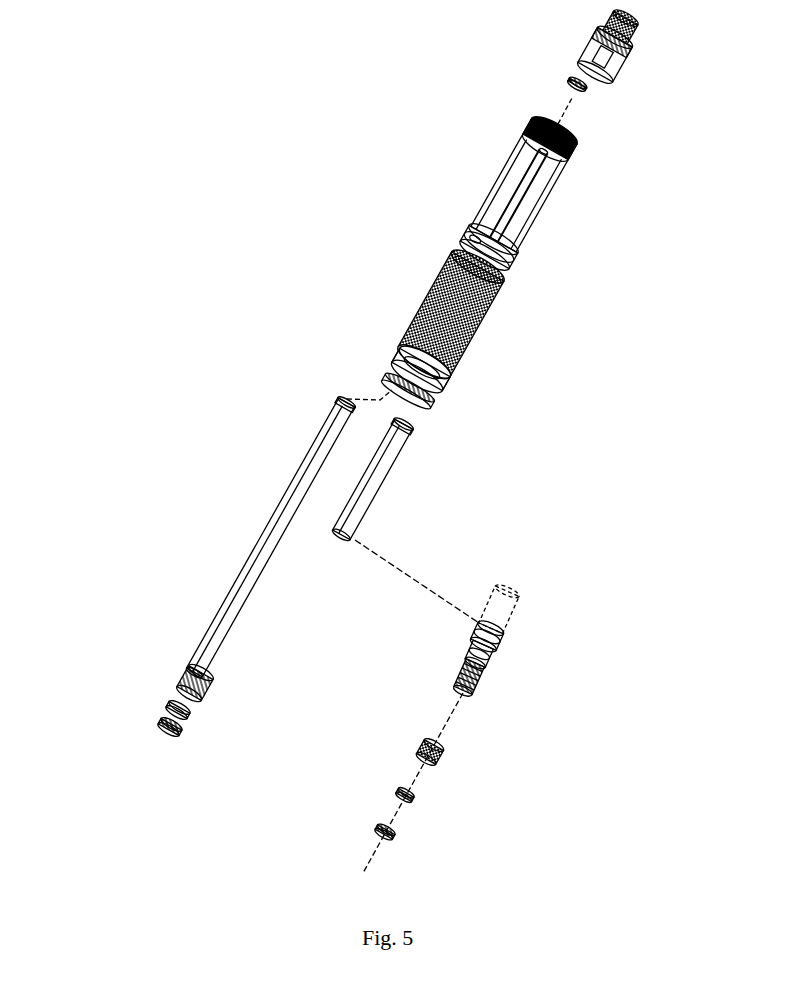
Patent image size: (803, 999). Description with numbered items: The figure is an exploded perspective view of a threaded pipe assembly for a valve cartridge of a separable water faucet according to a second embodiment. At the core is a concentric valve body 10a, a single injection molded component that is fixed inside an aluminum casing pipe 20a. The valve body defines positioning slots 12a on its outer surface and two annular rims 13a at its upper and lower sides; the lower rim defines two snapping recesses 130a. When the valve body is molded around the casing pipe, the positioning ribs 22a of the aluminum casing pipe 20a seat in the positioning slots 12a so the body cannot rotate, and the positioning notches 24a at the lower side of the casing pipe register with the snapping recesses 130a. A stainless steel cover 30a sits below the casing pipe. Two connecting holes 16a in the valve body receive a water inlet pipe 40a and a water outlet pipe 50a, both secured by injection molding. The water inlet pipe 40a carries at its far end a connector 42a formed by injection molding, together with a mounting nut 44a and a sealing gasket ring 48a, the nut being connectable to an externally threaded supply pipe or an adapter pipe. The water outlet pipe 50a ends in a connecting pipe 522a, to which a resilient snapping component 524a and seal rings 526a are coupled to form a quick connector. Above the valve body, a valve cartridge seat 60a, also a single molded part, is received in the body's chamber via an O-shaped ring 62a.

The concentric valve body 10a is at (577, 147).
The positioning slots 12a is at (533, 167).
The annular rims 13a is at (517, 267).
The connecting holes 16a is at (480, 243).
The snapping recesses 130a is at (481, 262).
The aluminum casing pipe 20a is at (500, 307).
The positioning ribs 22a is at (437, 387).
The positioning notches 24a is at (398, 350).
The stainless steel cover 30a is at (383, 377).
The water inlet pipe 40a is at (280, 498).
The connector 42a is at (163, 707).
The mounting nut 44a is at (175, 667).
The sealing gasket ring 48a is at (157, 722).
The water outlet pipe 50a is at (365, 507).
The valve cartridge seat 60a is at (623, 43).
The O-shaped ring 62a is at (585, 88).
The connecting pipe 522a is at (503, 657).
The resilient snapping component 524a is at (443, 763).
The seal rings 526a is at (393, 835).